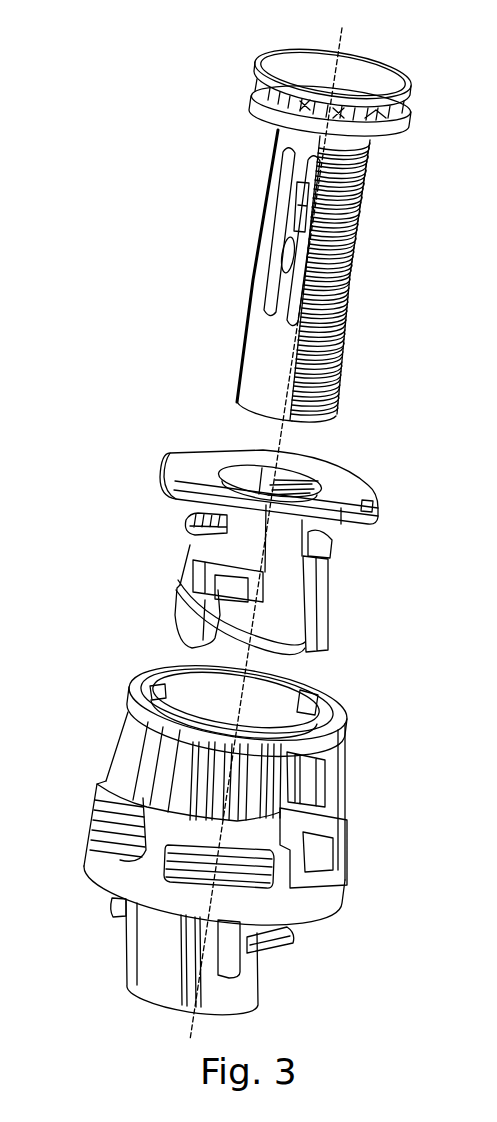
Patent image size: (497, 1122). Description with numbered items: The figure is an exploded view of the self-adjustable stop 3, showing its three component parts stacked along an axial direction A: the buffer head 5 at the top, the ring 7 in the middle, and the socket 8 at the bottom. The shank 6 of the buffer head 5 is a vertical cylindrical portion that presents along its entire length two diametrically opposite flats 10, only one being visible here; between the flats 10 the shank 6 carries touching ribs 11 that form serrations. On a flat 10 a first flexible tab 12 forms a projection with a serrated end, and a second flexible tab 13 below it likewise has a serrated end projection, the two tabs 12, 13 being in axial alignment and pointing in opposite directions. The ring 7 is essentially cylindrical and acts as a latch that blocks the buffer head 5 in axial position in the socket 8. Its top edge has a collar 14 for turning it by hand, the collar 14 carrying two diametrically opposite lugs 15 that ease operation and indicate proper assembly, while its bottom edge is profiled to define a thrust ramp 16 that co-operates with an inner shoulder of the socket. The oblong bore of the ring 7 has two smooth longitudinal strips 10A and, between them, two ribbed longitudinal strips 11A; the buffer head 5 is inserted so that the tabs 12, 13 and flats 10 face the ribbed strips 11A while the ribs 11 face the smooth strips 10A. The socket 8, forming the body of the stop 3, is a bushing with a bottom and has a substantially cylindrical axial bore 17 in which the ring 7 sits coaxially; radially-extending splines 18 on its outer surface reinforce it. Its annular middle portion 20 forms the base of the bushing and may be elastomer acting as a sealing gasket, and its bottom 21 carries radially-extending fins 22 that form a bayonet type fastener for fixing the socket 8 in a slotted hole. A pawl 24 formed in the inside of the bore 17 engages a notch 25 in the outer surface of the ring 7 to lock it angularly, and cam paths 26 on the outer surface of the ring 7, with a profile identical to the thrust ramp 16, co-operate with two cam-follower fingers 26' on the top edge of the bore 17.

The axial direction A is at (343, 48).
The self-adjustable stop 3 is at (424, 542).
The buffer head 5 is at (410, 149).
The shank 6 is at (365, 226).
The ring 7 is at (330, 586).
The socket 8 is at (360, 816).
The flat 10 is at (252, 380).
The smooth longitudinal strip 10A is at (240, 475).
The ribs 11 is at (332, 397).
The ribbed longitudinal strip 11A is at (313, 482).
The first flexible tab 12 is at (270, 220).
The second flexible tab 13 is at (263, 260).
The collar 14 is at (173, 500).
The lug 15 is at (167, 455).
The thrust ramp 16 is at (188, 617).
The axial bore 17 is at (262, 710).
The splines 18 is at (150, 790).
The middle portion 20 is at (103, 880).
The bottom 21 is at (250, 980).
The fins 22 is at (290, 943).
The pawl 24 is at (310, 790).
The notch 25 is at (328, 578).
The cam path 26 is at (380, 521).
The cam-follower finger 26' is at (259, 676).